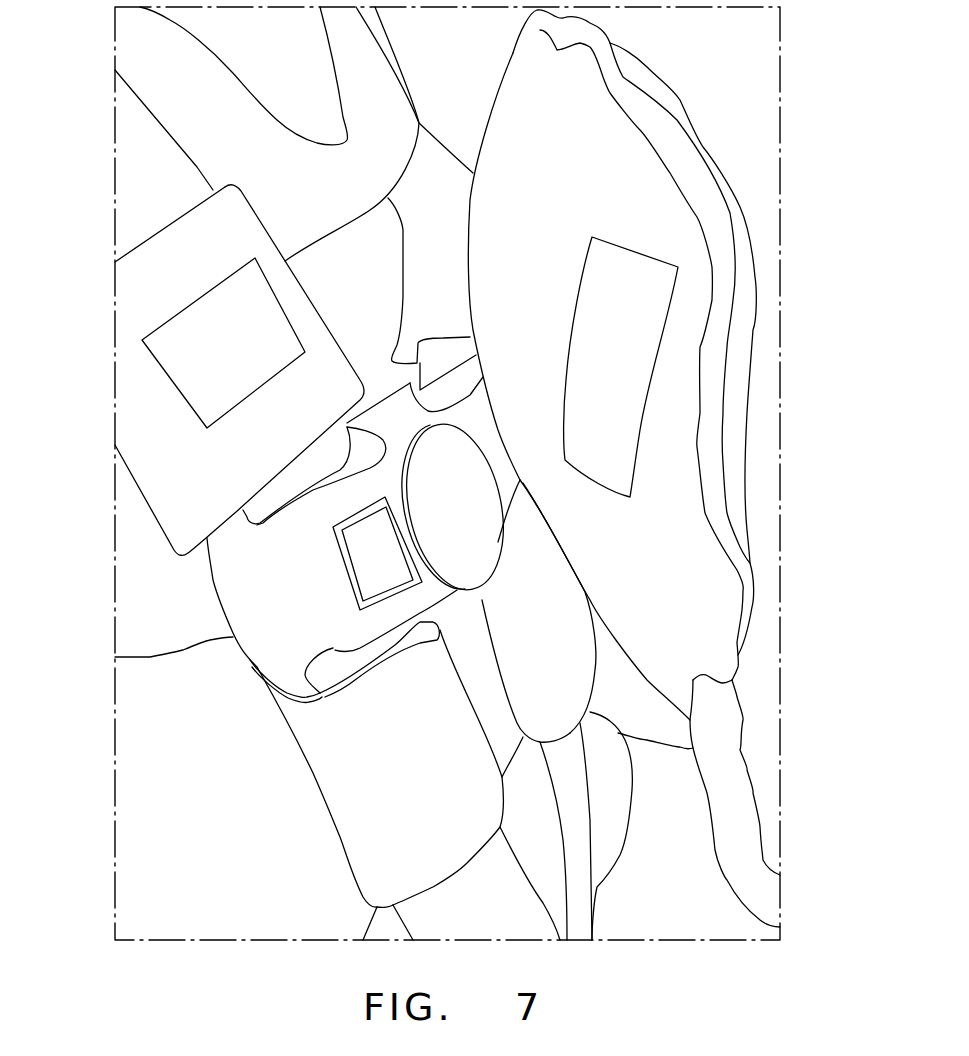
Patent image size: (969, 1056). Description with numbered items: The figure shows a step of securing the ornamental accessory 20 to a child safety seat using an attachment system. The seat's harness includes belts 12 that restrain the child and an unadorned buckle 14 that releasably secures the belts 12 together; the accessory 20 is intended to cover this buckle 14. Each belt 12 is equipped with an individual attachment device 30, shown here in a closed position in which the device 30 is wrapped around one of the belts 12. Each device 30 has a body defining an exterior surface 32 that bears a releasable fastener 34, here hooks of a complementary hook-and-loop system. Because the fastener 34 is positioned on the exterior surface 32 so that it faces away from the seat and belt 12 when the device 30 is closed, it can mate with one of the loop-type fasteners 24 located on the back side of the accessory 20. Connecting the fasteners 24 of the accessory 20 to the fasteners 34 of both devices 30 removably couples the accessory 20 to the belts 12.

The belt 12 is at (400, 67).
The buckle 14 is at (297, 557).
The ornamental accessory 20 is at (722, 136).
The fastener 24 is at (617, 345).
The attachment device 30 is at (136, 228).
The exterior surface 32 is at (455, 210).
The releasable fastener 34 is at (213, 340).